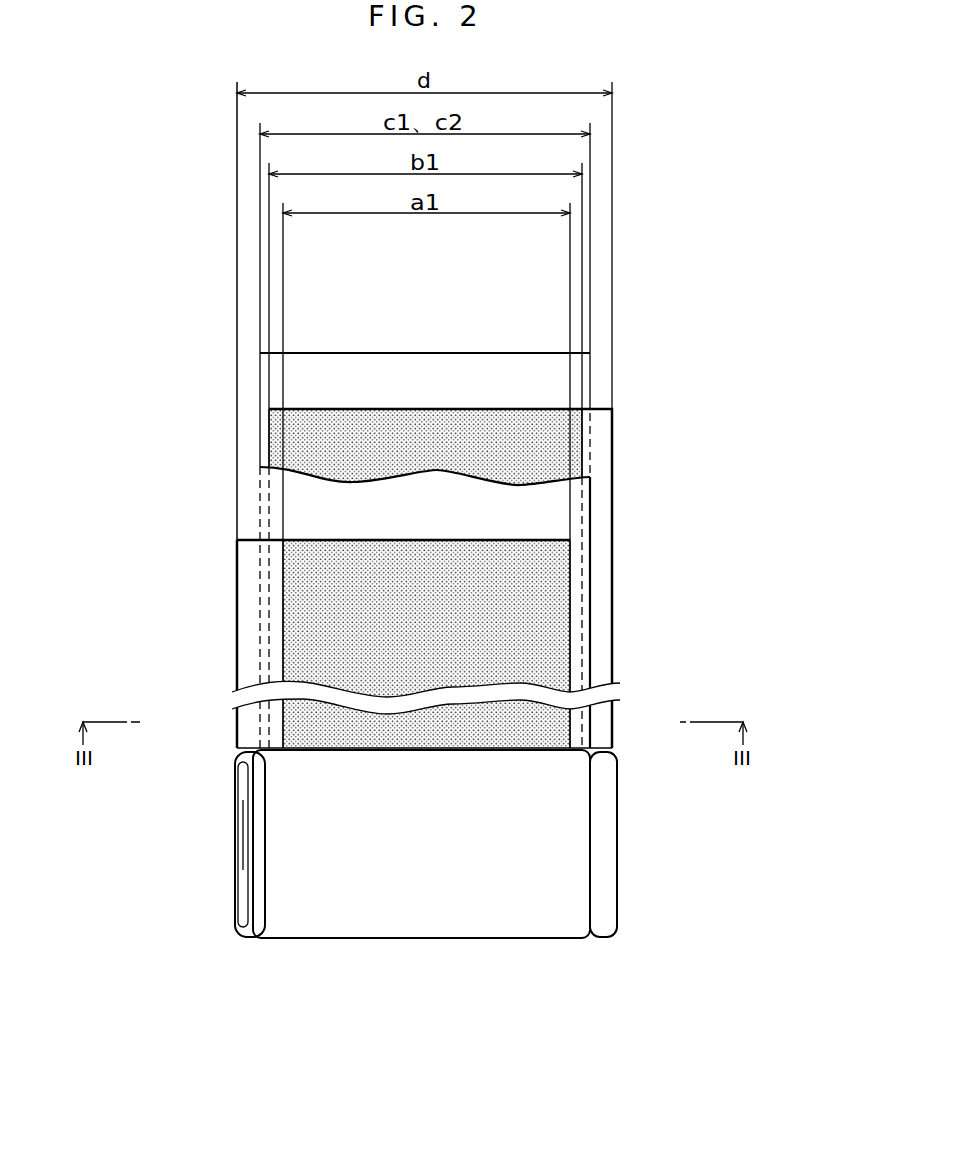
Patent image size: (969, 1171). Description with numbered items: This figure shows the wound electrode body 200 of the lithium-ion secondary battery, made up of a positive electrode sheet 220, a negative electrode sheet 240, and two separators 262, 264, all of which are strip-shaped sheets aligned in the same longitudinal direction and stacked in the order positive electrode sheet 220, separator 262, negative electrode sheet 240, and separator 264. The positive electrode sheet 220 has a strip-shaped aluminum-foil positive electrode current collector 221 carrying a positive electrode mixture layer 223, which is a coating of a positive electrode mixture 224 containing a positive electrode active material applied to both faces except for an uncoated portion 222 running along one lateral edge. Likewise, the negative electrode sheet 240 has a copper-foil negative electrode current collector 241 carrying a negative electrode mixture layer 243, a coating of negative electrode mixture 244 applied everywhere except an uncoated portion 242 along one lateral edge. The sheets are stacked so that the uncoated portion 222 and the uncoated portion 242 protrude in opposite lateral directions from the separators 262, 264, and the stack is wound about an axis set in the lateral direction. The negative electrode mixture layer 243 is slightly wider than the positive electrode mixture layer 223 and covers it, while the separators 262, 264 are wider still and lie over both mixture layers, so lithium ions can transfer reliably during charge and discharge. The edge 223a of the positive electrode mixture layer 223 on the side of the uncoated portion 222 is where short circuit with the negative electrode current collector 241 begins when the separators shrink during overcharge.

The wound electrode body 200 is at (460, 914).
The positive electrode sheet 220 is at (233, 591).
The positive electrode current collector 221 is at (414, 540).
The uncoated portion 222 is at (250, 657).
The positive electrode mixture layer 223 is at (316, 637).
The edge of the positive electrode mixture layer 223a is at (283, 565).
The positive electrode mixture 224 is at (568, 605).
The negative electrode sheet 240 is at (618, 419).
The negative electrode current collector 241 is at (414, 406).
The uncoated portion 242 is at (600, 462).
The negative electrode mixture layer 243 is at (518, 420).
The negative electrode mixture 244 is at (276, 440).
The separator 262 is at (276, 512).
The separator 264 is at (276, 378).